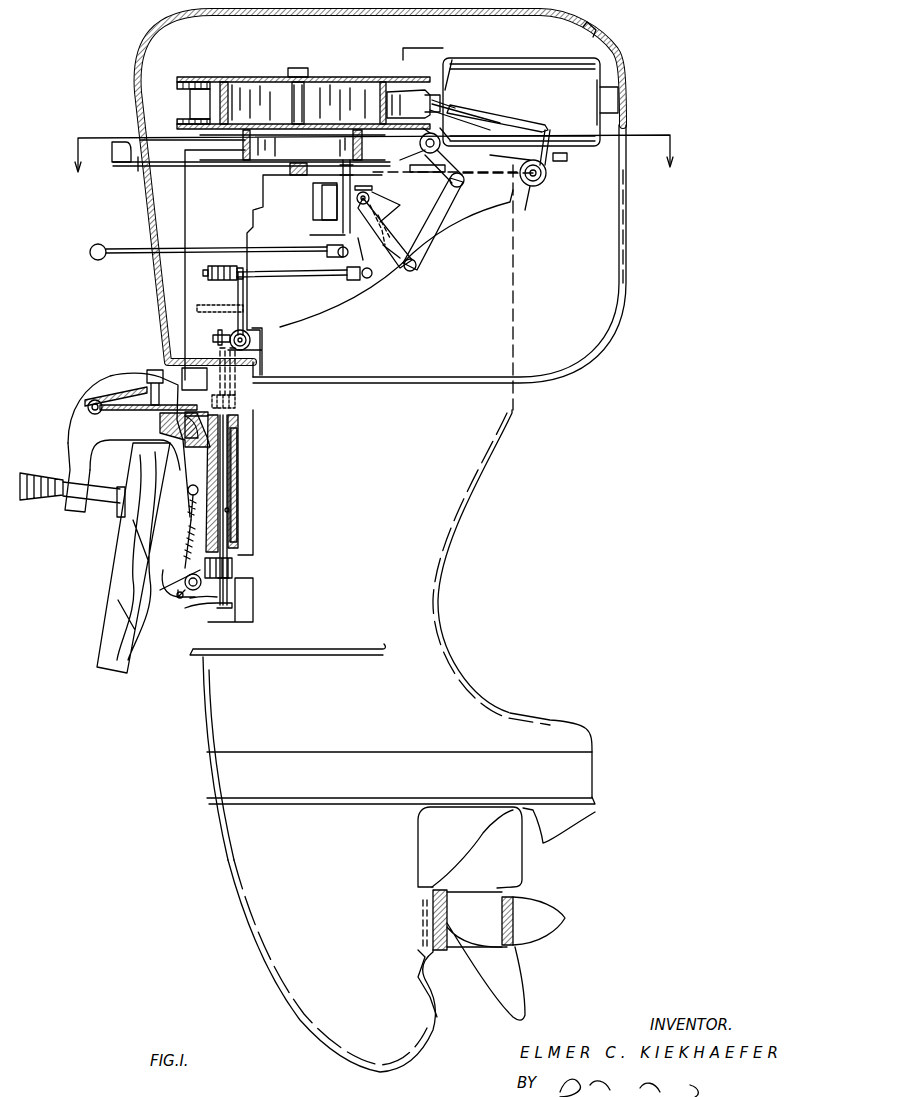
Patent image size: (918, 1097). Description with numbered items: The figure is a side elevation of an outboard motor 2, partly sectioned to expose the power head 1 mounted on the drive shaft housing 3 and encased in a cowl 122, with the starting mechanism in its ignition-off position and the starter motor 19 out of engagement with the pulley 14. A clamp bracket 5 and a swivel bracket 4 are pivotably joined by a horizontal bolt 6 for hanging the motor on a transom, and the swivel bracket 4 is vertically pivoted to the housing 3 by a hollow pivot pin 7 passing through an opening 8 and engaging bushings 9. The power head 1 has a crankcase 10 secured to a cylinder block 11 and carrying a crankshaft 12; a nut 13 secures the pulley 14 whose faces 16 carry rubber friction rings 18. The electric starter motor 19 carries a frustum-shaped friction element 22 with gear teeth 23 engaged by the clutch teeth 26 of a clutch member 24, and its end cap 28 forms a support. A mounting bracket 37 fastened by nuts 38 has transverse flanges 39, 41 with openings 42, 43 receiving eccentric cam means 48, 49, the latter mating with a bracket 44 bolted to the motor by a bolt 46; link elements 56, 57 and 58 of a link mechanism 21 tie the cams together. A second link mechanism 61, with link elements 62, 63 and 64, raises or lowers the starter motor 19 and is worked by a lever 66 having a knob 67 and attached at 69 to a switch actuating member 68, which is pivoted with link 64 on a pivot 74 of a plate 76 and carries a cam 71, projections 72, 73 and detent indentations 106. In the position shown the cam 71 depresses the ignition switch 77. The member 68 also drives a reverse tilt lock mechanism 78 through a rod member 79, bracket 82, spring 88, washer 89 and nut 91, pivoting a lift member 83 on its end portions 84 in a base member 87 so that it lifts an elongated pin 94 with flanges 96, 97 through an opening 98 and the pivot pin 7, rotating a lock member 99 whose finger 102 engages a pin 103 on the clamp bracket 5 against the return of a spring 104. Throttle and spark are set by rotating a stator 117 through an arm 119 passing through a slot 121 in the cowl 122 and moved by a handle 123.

The power head 1 is at (262, 196).
The outboard motor 2 is at (540, 556).
The drive shaft housing 3 is at (470, 480).
The swivel bracket 4 is at (108, 392).
The clamp bracket 5 is at (47, 445).
The horizontal bolt 6 is at (88, 405).
The pivot pin 7 is at (239, 485).
The opening 8 is at (230, 510).
The bushings 9 is at (237, 401).
The crankcase 10 is at (246, 232).
The cylinder block 11 is at (497, 195).
The crankshaft 12 is at (298, 175).
The nut 13 is at (308, 70).
The pulley 14 is at (250, 76).
The pulley faces 16 is at (200, 118).
The friction rings 18 is at (182, 118).
The starter motor 19 is at (525, 74).
The link mechanism 21 is at (542, 115).
The friction element 22 is at (405, 92).
The gear teeth 23 is at (435, 95).
The clutch member 24 is at (440, 100).
The clutch teeth 26 is at (455, 95).
The end cap 28 is at (452, 60).
The mounting bracket 37 is at (472, 174).
The nuts 38 is at (427, 161).
The transverse flanges 39 is at (406, 159).
The transverse flanges 41 is at (536, 185).
The openings 42 is at (466, 129).
The openings 43 is at (532, 188).
The bracket 44 is at (546, 173).
The bolt 46 is at (568, 158).
The cam means 48 is at (420, 143).
The cam means 49 is at (545, 145).
The link element 56 is at (432, 130).
The link element 57 is at (505, 117).
The link element 58 is at (510, 154).
The link mechanism 61 is at (441, 235).
The link element 62 is at (448, 168).
The link element 63 is at (440, 212).
The link element 64 is at (392, 250).
The lever 66 is at (290, 235).
The knob 67 is at (98, 244).
The switch actuating member 68 is at (355, 280).
The attachment point 69 is at (340, 256).
The cam 71 is at (360, 204).
The projection 72 is at (388, 203).
The projection 73 is at (357, 239).
The pivot 74 is at (372, 187).
The plate 76 is at (320, 210).
The ignition switch 77 is at (318, 235).
The reverse tilt lock mechanism 78 is at (210, 319).
The rod member 79 is at (312, 277).
The bracket 82 is at (244, 296).
The lift member 83 is at (213, 338).
The cylindrical end portions 84 is at (251, 340).
The base member 87 is at (252, 355).
The spring 88 is at (238, 280).
The washer 89 is at (212, 281).
The nut 91 is at (206, 276).
The elongated pin 94 is at (236, 468).
The flange portion 96 is at (220, 330).
The flange portion 97 is at (222, 609).
The opening 98 is at (237, 371).
The lock member 99 is at (190, 592).
The finger 102 is at (172, 558).
The pin 103 is at (178, 597).
The spring 104 is at (190, 510).
The indentations 106 is at (368, 233).
The stator 117 is at (245, 157).
The arm 119 is at (170, 168).
The slot 121 is at (148, 162).
The cowl 122 is at (137, 72).
The handle 123 is at (118, 155).